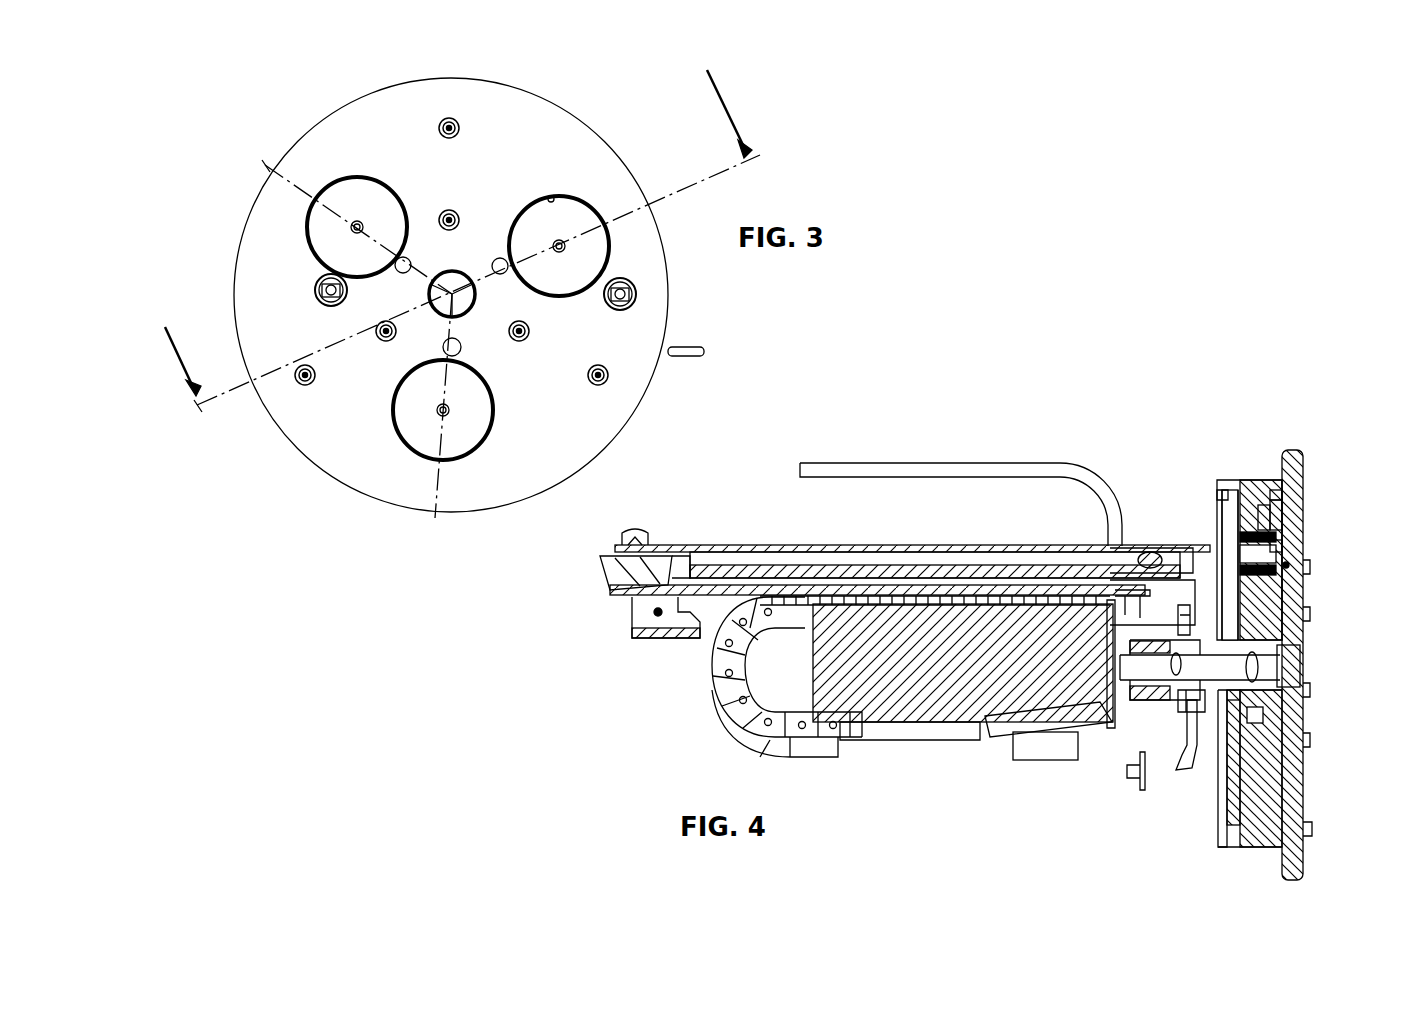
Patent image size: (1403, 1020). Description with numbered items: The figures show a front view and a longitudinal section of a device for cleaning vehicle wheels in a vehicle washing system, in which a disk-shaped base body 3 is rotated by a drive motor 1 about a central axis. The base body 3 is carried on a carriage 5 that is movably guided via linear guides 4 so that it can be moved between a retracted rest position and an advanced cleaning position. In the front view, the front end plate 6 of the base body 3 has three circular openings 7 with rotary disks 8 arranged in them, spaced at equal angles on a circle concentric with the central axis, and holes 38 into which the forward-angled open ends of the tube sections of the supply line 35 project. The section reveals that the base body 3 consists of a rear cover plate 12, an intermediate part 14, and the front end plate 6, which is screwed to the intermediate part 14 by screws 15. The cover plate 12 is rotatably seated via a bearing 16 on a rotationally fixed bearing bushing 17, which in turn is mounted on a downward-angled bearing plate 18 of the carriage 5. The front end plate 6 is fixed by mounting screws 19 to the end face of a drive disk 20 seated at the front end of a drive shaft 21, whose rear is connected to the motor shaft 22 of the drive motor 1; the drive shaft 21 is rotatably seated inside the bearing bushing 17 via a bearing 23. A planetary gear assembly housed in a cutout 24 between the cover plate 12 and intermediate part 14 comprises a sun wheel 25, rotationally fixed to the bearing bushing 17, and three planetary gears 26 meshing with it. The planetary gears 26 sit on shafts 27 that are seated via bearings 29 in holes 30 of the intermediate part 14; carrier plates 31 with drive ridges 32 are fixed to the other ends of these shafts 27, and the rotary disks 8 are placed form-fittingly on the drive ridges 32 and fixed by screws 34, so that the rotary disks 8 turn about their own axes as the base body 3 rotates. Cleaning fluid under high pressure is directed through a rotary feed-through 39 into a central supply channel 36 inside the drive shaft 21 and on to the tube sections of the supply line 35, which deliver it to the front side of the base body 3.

In FIG. 4, the drive motor 1 is at (880, 722).
In FIG. 3, the base body 3 is at (275, 472).
In FIG. 4, the base body 3 is at (1257, 445).
In FIG. 4, the linear guides 4 is at (705, 605).
In FIG. 4, the carriage 5 is at (712, 545).
In FIG. 3, the front end plate 6 is at (484, 488).
In FIG. 4, the front end plate 6 is at (1300, 862).
In FIG. 3, the circular openings 7 is at (553, 197).
In FIG. 4, the circular openings 7 is at (1300, 585).
In FIG. 3, the rotary disks 8 is at (520, 232).
In FIG. 4, the rotary disks 8 is at (1282, 530).
In FIG. 4, the rear cover plate 12 is at (1220, 838).
In FIG. 4, the intermediate part 14 is at (1250, 840).
In FIG. 3, the screws 15 is at (383, 343).
In FIG. 4, the screws 15 is at (1312, 830).
In FIG. 4, the bearing 16 is at (1185, 602).
In FIG. 4, the bearing bushing 17 is at (1192, 740).
In FIG. 4, the bearing plate 18 is at (1178, 570).
In FIG. 4, the mounting screws 19 is at (1304, 612).
In FIG. 4, the drive disk 20 is at (1304, 712).
In FIG. 4, the drive shaft 21 is at (1304, 666).
In FIG. 4, the motor shaft 22 is at (1098, 725).
In FIG. 4, the bearing 23 is at (1180, 705).
In FIG. 4, the cutout 24 is at (1228, 812).
In FIG. 4, the sun wheel 25 is at (1290, 752).
In FIG. 4, the planetary gears 26 is at (1222, 492).
In FIG. 4, the shafts 27 is at (1256, 532).
In FIG. 4, the bearings 29 is at (1258, 565).
In FIG. 4, the holes 30 is at (1278, 500).
In FIG. 4, the carrier plates 31 is at (1282, 492).
In FIG. 4, the drive ridges 32 is at (1282, 542).
In FIG. 4, the screws 34 is at (1290, 565).
In FIG. 3, the supply line 35 is at (318, 302).
In FIG. 4, the central supply channel 36 is at (1140, 730).
In FIG. 3, the holes 38 is at (322, 281).
In FIG. 4, the rotary feed-through 39 is at (1125, 590).